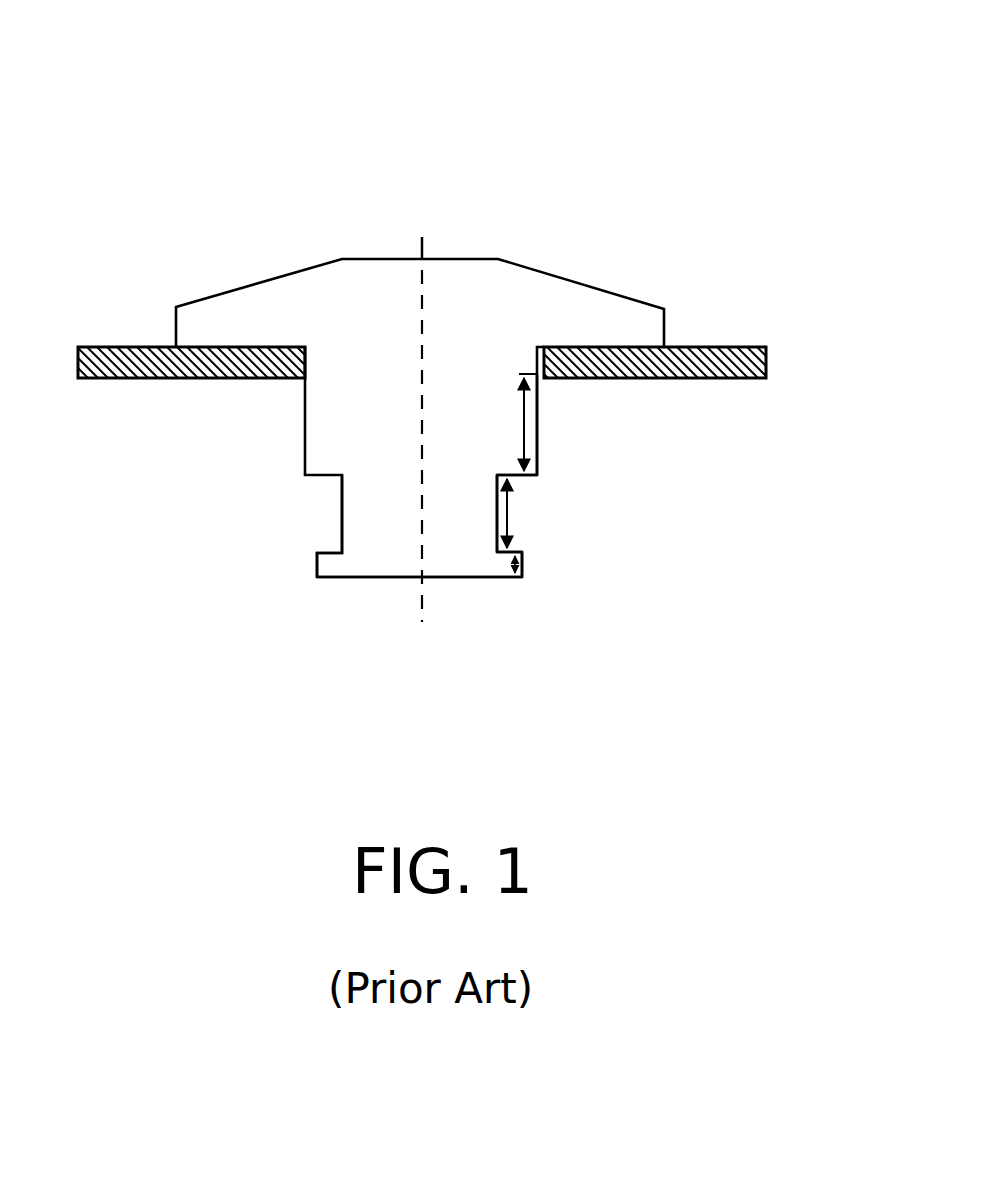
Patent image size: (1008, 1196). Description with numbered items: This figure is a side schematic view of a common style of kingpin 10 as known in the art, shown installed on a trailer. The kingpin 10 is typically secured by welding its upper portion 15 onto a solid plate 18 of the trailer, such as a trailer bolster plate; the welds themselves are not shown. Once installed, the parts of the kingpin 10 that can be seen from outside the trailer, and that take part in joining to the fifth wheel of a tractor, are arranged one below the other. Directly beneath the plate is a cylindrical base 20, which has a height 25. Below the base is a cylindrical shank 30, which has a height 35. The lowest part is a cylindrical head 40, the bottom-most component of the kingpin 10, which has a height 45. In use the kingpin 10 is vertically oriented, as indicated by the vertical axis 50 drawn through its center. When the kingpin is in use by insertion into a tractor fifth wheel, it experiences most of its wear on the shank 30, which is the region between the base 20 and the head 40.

The kingpin 10 is at (441, 214).
The upper portion 15 is at (208, 320).
The solid plate 18 is at (132, 378).
The cylindrical base 20 is at (492, 405).
The height of the base 25 is at (534, 448).
The cylindrical shank 30 is at (462, 500).
The height of the shank 35 is at (508, 518).
The cylindrical head 40 is at (457, 564).
The height of the head 45 is at (520, 567).
The vertical axis 50 is at (418, 532).